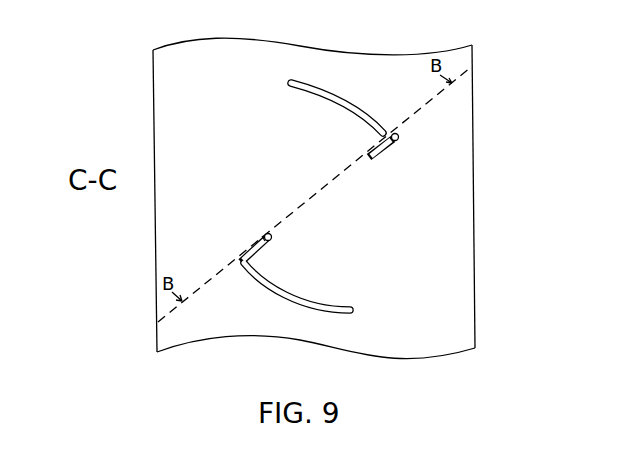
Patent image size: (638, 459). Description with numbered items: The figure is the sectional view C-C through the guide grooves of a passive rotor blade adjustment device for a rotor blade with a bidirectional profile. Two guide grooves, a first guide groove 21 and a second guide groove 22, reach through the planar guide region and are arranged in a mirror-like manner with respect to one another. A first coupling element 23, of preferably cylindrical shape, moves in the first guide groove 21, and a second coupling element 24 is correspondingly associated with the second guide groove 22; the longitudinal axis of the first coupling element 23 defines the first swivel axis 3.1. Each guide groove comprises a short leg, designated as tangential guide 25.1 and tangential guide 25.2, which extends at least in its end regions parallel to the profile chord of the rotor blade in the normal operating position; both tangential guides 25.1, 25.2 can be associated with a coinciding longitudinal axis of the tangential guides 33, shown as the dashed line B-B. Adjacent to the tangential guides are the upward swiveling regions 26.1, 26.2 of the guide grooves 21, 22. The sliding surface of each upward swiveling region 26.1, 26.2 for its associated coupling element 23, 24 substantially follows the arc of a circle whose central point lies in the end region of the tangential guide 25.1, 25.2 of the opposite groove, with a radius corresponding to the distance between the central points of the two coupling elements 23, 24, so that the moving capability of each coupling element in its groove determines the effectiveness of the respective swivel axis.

The first guide groove 21 is at (257, 310).
The second guide groove 22 is at (353, 112).
The first coupling element 23 is at (267, 231).
The second coupling element 24 is at (399, 137).
The tangential guide 25.1 is at (247, 251).
The tangential guide 25.2 is at (385, 148).
The upward swiveling region 26.1 is at (290, 296).
The upward swiveling region 26.2 is at (325, 90).
The first swivel axis 3.1 is at (262, 235).
The longitudinal axis of the tangential guides 33 is at (328, 188).